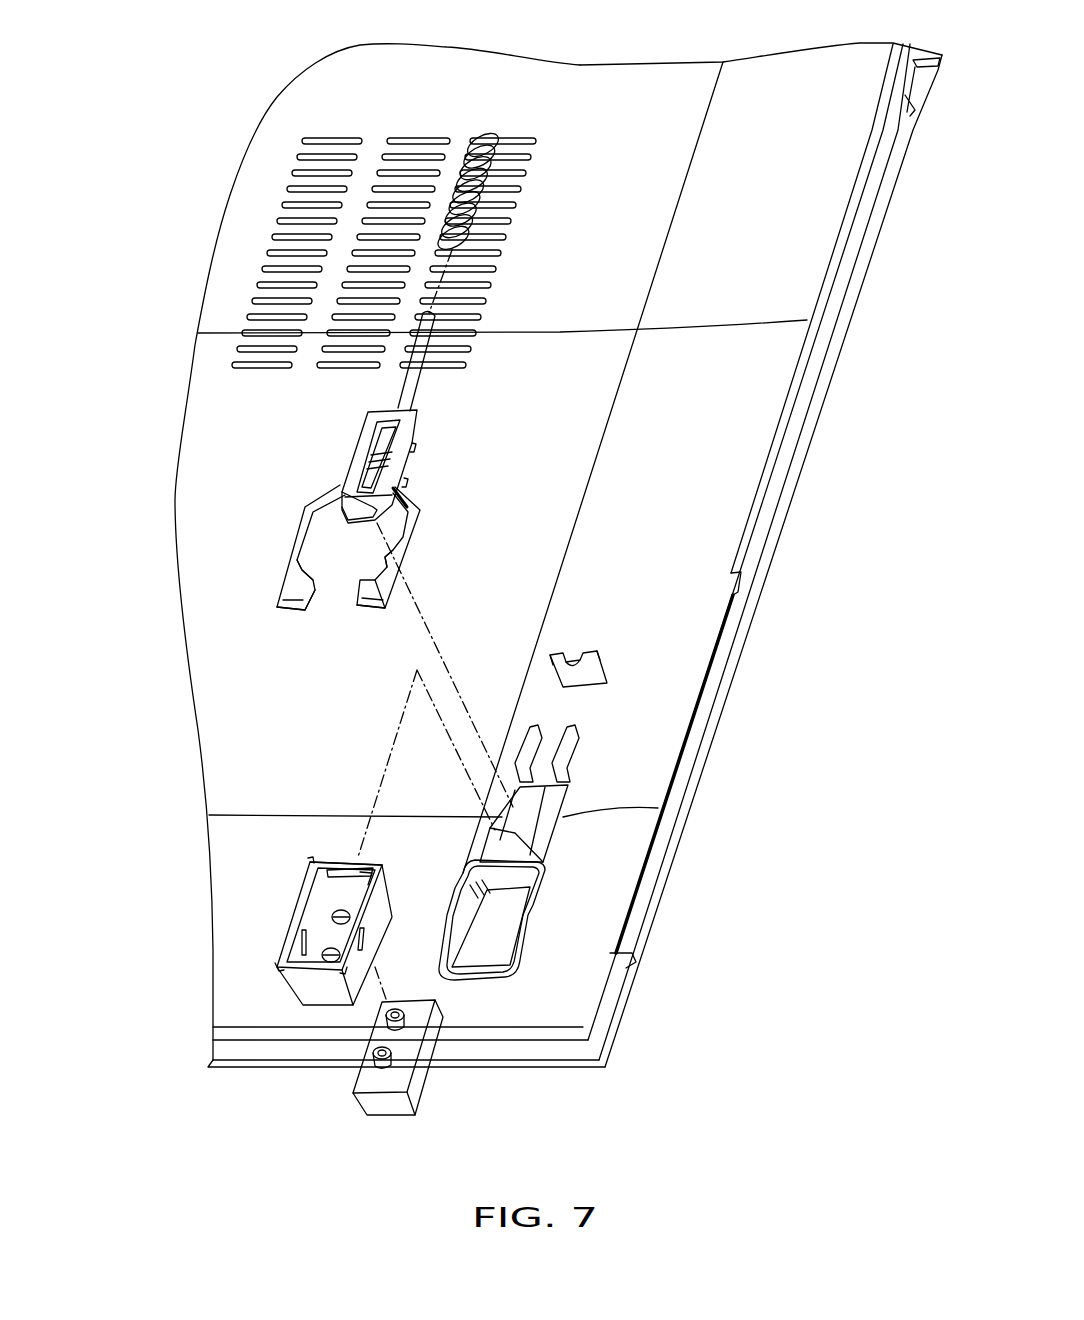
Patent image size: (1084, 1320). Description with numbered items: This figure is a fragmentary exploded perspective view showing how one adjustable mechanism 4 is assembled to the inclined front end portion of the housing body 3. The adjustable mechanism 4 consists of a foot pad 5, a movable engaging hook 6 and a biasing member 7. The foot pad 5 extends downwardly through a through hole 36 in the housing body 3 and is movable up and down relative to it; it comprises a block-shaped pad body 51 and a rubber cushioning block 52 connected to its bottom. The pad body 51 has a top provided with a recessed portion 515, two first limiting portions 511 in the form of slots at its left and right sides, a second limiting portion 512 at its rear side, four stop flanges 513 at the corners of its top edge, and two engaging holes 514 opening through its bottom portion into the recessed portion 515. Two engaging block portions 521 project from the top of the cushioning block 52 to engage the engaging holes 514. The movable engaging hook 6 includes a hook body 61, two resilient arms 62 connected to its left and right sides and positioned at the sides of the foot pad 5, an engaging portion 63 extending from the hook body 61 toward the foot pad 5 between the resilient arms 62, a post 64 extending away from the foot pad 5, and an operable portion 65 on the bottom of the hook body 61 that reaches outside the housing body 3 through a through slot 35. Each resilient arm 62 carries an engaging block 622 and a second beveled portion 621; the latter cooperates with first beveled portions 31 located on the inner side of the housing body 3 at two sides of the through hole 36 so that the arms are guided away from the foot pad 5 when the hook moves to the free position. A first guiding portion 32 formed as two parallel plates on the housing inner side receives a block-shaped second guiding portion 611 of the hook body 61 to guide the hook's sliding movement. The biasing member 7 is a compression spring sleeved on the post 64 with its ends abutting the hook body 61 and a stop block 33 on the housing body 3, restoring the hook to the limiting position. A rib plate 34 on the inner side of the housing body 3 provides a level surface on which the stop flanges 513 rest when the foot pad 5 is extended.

The housing body 3 is at (733, 512).
The adjustable mechanism 4 is at (185, 476).
The foot pad 5 is at (240, 958).
The movable engaging hook 6 is at (258, 450).
The biasing member 7 is at (480, 147).
The first beveled portion 31 is at (577, 934).
The first guiding portion 32 is at (535, 743).
The stop block 33 is at (592, 670).
The rib plate 34 is at (543, 867).
The through slot 35 is at (548, 802).
The through hole 36 is at (500, 945).
The pad body 51 is at (301, 906).
The first limiting portion 511 is at (300, 945).
The second limiting portion 512 is at (347, 872).
The stop flange 513 is at (313, 860).
The engaging hole 514 is at (340, 917).
The recessed portion 515 is at (348, 897).
The cushioning block 52 is at (435, 1070).
The engaging block portion 521 is at (396, 1063).
The hook body 61 is at (322, 461).
The second guiding portion 611 is at (417, 428).
The resilient arm 62 is at (315, 570).
The second beveled portion 621 is at (302, 573).
The engaging block 622 is at (303, 590).
The engaging portion 63 is at (360, 515).
The post 64 is at (407, 392).
The operable portion 65 is at (403, 483).